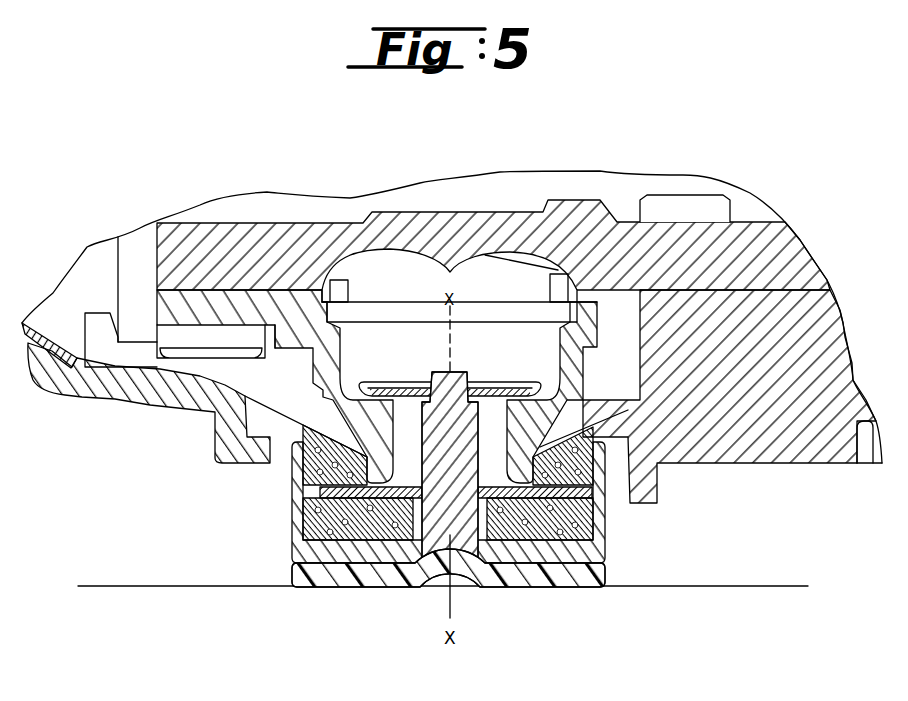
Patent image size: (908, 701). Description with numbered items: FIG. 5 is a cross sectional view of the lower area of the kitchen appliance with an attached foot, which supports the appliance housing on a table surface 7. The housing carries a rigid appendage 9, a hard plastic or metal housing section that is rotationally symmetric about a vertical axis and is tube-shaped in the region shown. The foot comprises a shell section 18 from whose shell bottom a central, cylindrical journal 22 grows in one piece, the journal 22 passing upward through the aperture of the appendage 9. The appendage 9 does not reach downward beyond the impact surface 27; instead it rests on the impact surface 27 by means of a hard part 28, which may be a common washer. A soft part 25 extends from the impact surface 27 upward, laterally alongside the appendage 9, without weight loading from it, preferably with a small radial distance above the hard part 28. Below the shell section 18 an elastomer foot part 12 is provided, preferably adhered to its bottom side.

The table surface 7 is at (762, 585).
The appendage 9 is at (365, 413).
The foot part 12 is at (390, 578).
The shell section 18 is at (421, 509).
The journal 22 is at (455, 447).
The soft part 25 is at (535, 527).
The impact surface 27 is at (376, 497).
The hard part 28 is at (345, 493).